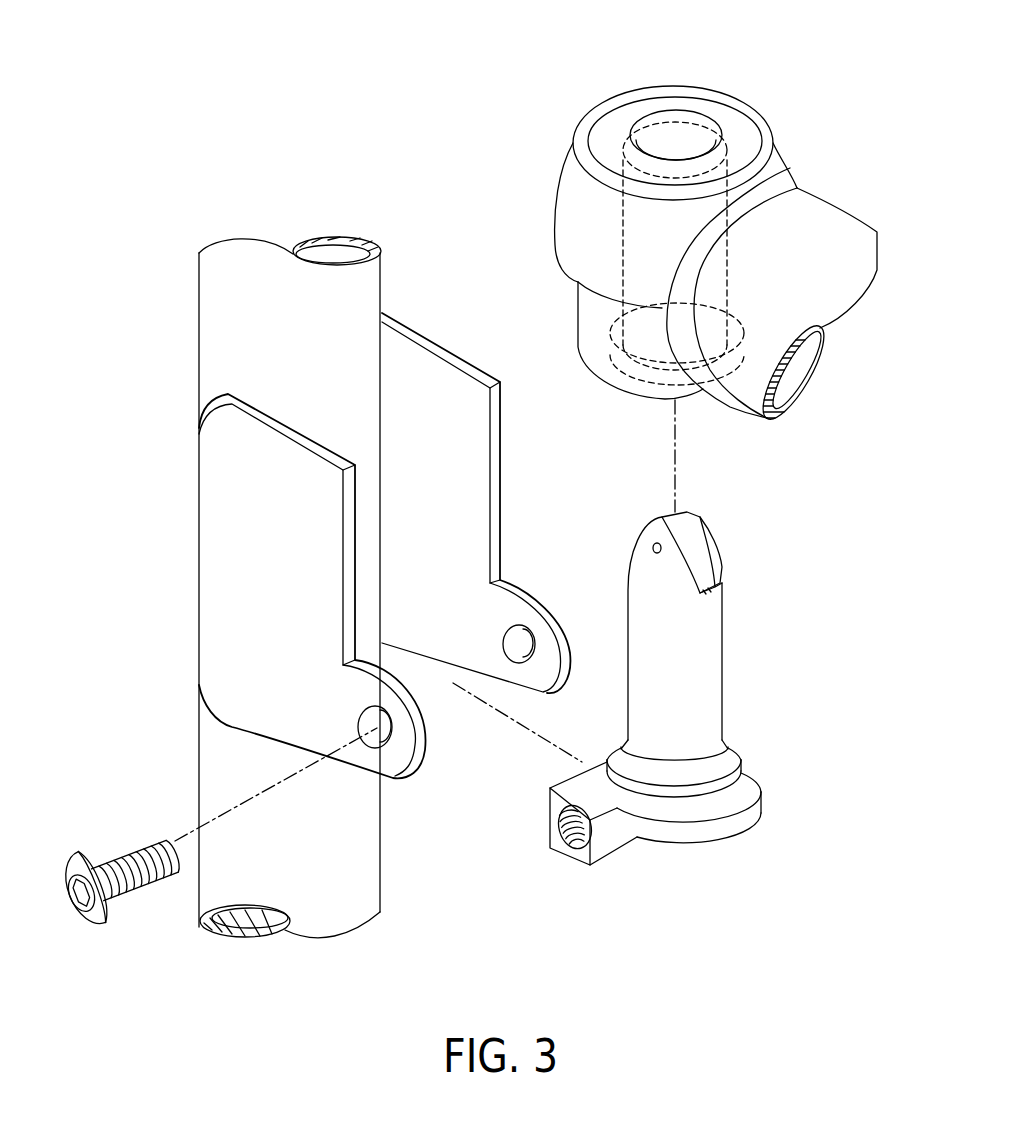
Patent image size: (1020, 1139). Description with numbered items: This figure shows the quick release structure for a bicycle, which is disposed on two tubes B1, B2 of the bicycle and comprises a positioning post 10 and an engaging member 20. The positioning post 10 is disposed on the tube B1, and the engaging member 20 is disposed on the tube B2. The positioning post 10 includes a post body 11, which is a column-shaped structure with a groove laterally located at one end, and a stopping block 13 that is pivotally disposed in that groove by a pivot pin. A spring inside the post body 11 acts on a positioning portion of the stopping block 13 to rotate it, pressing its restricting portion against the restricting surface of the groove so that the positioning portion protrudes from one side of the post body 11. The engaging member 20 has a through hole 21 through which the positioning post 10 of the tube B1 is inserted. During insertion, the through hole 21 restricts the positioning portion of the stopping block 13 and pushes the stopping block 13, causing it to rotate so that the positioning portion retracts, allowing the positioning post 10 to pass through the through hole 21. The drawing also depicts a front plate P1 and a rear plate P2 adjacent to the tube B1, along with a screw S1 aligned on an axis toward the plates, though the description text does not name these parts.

The positioning post 10 is at (687, 701).
The post body 11 is at (712, 665).
The stopping block 13 is at (703, 543).
The engaging member 20 is at (656, 208).
The through hole 21 is at (695, 147).
The tube B1 is at (212, 345).
The tube B2 is at (818, 217).
The front plate P1 is at (312, 586).
The rear plate P2 is at (476, 503).
The screw S1 is at (123, 875).